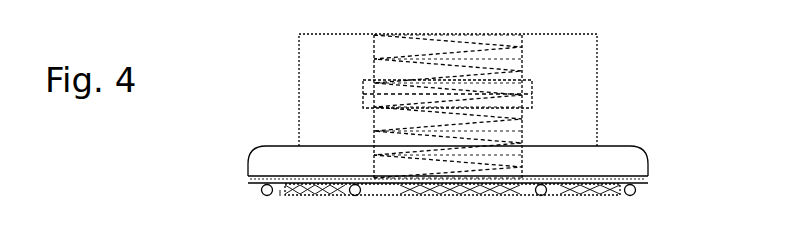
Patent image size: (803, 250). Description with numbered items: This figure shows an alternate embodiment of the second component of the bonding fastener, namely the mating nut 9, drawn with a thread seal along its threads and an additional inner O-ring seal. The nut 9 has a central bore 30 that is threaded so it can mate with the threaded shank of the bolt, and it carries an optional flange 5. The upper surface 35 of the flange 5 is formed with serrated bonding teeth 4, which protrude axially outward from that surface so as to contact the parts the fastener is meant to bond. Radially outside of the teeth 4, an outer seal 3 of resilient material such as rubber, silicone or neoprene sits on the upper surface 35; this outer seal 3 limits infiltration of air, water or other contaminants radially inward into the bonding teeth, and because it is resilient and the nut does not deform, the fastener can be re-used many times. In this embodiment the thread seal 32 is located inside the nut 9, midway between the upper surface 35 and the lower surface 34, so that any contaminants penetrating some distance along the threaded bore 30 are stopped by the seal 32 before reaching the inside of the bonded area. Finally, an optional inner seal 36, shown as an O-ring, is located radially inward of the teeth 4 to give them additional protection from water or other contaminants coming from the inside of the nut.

The outer seal 3 is at (261, 189).
The serrated bonding teeth 4 is at (598, 190).
The flange 5 is at (628, 143).
The mating nut 9 is at (598, 34).
The central bore 30 is at (516, 76).
The seal 32 is at (368, 91).
The lower surface 34 is at (302, 23).
The upper surface 35 is at (281, 196).
The inner seal 36 is at (356, 200).